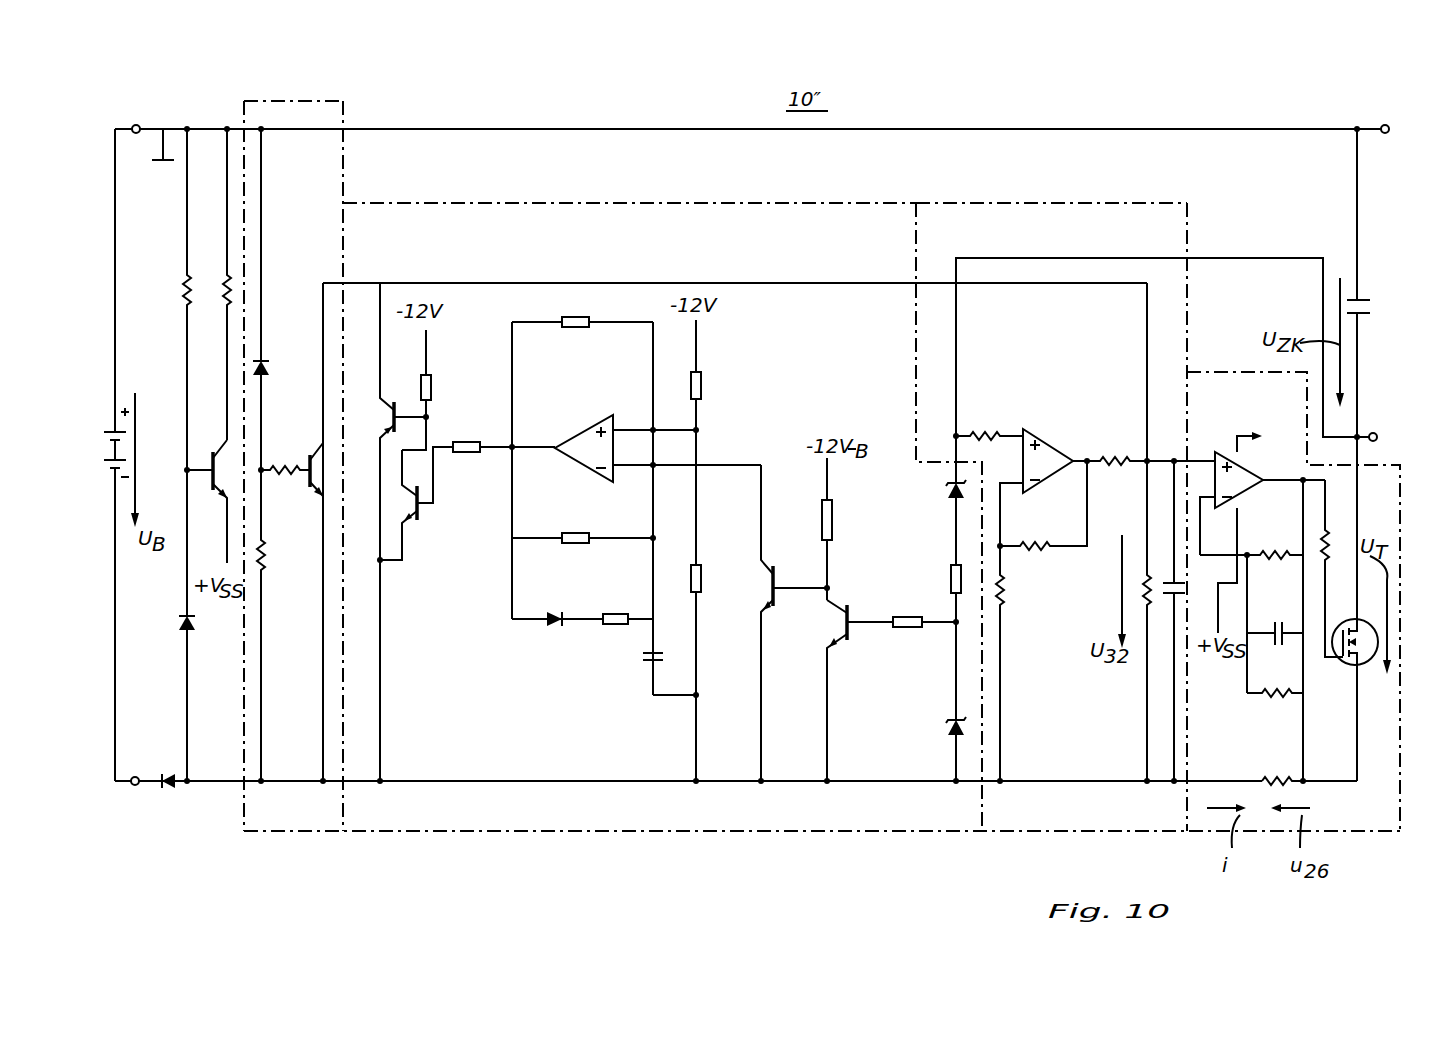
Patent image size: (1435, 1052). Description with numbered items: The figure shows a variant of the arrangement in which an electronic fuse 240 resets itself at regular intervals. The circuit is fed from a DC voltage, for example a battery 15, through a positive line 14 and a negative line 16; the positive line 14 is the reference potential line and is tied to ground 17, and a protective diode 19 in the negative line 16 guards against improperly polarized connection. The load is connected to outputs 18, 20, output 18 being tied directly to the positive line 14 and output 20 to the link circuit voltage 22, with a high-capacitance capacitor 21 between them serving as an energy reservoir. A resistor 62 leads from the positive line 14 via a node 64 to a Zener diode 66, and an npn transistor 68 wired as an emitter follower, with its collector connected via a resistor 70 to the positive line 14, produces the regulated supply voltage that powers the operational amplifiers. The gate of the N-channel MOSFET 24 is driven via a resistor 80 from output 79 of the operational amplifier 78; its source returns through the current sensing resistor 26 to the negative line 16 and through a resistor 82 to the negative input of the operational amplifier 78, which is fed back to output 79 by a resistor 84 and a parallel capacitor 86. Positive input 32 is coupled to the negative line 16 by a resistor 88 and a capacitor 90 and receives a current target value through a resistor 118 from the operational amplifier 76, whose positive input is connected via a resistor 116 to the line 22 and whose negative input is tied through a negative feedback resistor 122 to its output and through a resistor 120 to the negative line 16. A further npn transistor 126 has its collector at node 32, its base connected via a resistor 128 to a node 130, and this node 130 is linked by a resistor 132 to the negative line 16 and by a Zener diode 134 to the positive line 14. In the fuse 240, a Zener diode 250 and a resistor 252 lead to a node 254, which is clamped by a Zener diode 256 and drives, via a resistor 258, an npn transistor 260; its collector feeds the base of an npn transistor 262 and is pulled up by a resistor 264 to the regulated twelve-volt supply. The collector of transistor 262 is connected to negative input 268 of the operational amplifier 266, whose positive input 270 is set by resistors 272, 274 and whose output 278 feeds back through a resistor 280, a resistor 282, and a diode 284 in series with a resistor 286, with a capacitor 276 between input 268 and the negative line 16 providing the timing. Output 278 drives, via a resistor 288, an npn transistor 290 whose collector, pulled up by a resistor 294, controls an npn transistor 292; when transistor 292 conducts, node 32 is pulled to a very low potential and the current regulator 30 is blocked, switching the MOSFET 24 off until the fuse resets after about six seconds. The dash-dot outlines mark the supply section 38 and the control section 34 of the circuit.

The positive line 14 is at (878, 129).
The battery 15 is at (110, 430).
The negative line 16 is at (478, 781).
The ground 17 is at (163, 150).
The output 18 is at (1385, 124).
The protective diode 19 is at (170, 790).
The output 20 is at (1375, 430).
The high-capacitance capacitor 21 is at (1368, 292).
The link circuit voltage 22 is at (1225, 258).
The N-channel MOSFET 24 is at (1362, 666).
The current sensing resistor 26 is at (1280, 776).
The current regulator 30 is at (1250, 372).
The positive input 32 is at (1150, 460).
The control circuit 34 is at (1092, 203).
The voltage supply circuit 38 is at (297, 101).
The resistor 62 is at (186, 292).
The node 64 is at (185, 469).
The Zener diode 66 is at (183, 626).
The npn transistor 68 is at (213, 462).
The resistor 70 is at (225, 290).
The operational amplifier 76 is at (1055, 428).
The operational amplifier 78 is at (1250, 498).
The output 79 is at (1300, 478).
The resistor 80 is at (1330, 535).
The resistor 82 is at (1275, 690).
The resistor 84 is at (1290, 560).
The capacitor 86 is at (1278, 626).
The resistor 88 is at (1143, 575).
The capacitor 90 is at (1170, 600).
The resistor 116 is at (980, 433).
The resistor 118 is at (1113, 458).
The resistor 120 is at (1005, 600).
The negative feedback resistor 122 is at (1040, 549).
The npn transistor 126 is at (312, 456).
The resistor 128 is at (288, 467).
The node 130 is at (264, 475).
The resistor 132 is at (265, 568).
The Zener diode 134 is at (267, 365).
The electronic fuse 240 is at (768, 203).
The Zener diode 250 is at (946, 490).
The resistor 252 is at (952, 568).
The node 254 is at (952, 628).
The Zener diode 256 is at (948, 730).
The resistor 258 is at (906, 628).
The npn transistor 260 is at (850, 612).
The npn transistor 262 is at (776, 580).
The resistor 264 is at (822, 520).
The operational amplifier 266 is at (588, 432).
The negative input 268 is at (730, 465).
The positive input 270 is at (700, 430).
The resistor 272 is at (703, 385).
The resistor 274 is at (700, 570).
The capacitor 276 is at (645, 660).
The output 278 is at (510, 444).
The resistor 280 is at (576, 316).
The resistor 282 is at (575, 532).
The diode 284 is at (548, 624).
The resistor 286 is at (612, 626).
The resistor 288 is at (466, 453).
The npn transistor 290 is at (420, 516).
The npn transistor 292 is at (393, 402).
The resistor 294 is at (431, 385).